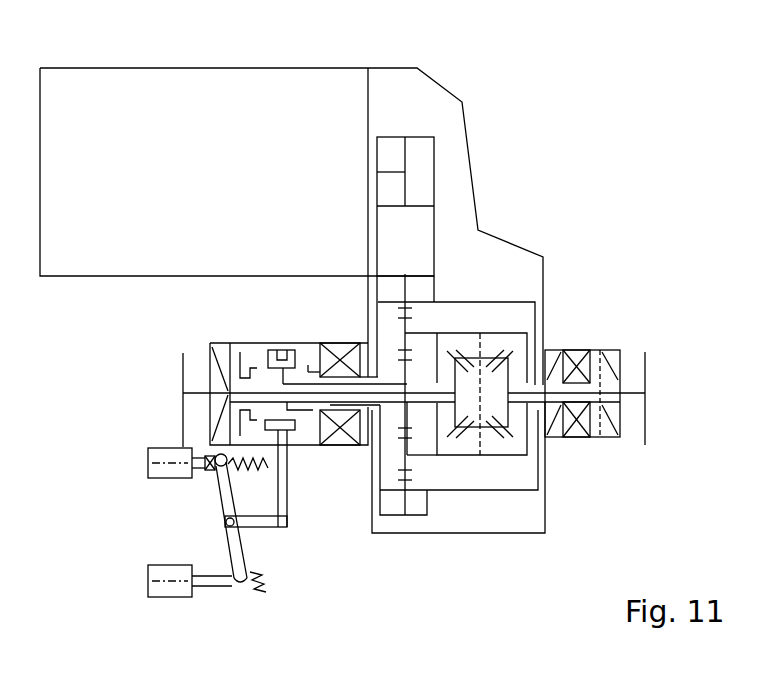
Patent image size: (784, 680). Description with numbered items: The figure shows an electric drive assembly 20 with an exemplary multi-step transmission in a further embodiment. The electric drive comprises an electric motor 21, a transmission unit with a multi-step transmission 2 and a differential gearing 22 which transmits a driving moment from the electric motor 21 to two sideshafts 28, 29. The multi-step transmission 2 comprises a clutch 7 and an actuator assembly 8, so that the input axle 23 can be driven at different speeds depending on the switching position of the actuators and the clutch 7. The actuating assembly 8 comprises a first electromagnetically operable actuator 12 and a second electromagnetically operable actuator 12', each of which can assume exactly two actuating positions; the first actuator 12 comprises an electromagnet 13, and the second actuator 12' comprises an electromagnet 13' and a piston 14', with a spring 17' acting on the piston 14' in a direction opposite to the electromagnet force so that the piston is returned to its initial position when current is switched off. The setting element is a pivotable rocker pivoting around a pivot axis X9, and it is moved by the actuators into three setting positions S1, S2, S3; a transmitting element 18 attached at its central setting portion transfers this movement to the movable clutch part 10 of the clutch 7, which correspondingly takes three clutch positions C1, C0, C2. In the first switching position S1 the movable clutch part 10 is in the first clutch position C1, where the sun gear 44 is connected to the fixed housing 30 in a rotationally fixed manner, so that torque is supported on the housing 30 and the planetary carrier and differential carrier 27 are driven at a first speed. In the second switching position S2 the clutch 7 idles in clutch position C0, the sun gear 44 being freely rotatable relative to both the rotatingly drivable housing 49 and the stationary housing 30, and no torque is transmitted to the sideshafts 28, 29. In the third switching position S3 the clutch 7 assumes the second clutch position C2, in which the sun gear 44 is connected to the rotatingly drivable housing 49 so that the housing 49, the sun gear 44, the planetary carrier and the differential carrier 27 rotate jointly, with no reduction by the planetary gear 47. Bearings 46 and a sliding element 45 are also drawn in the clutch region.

The drive train 20 is at (609, 51).
The electric motor 21 is at (220, 77).
The clutch 7 is at (254, 333).
The sun gear 44 is at (410, 375).
The rotatingly drivable housing 49 is at (515, 299).
The sideshaft 28 is at (632, 393).
The input axle 23 is at (684, 391).
The fixed housing 30 is at (210, 343).
The sliding sleeve 45 is at (247, 338).
The movable clutch part 10 is at (303, 342).
The sideshaft 29 is at (187, 383).
The first electromagnetically operable actuator 12 is at (155, 448).
The electromagnet 13 is at (145, 497).
The actuating assembly 8 is at (94, 519).
The bearing 46 is at (308, 425).
The transmitting element 18 is at (283, 510).
The planetary gear 47 is at (430, 480).
The differential carrier 27 is at (468, 457).
The differential gearing 22 is at (515, 472).
The multi-step transmission 2 is at (393, 585).
The second electromagnetically operable actuator 12' is at (168, 607).
The electromagnet 13' is at (179, 624).
The piston 14' is at (229, 552).
The spring 17' is at (262, 554).
The first clutch position C1 is at (246, 295).
The idle clutch position C0 is at (314, 312).
The second clutch position C2 is at (325, 295).
The first switching position S1 is at (225, 522).
The second switching position S2 is at (255, 497).
The third switching position S3 is at (260, 549).
The pivot axis X9 is at (248, 500).